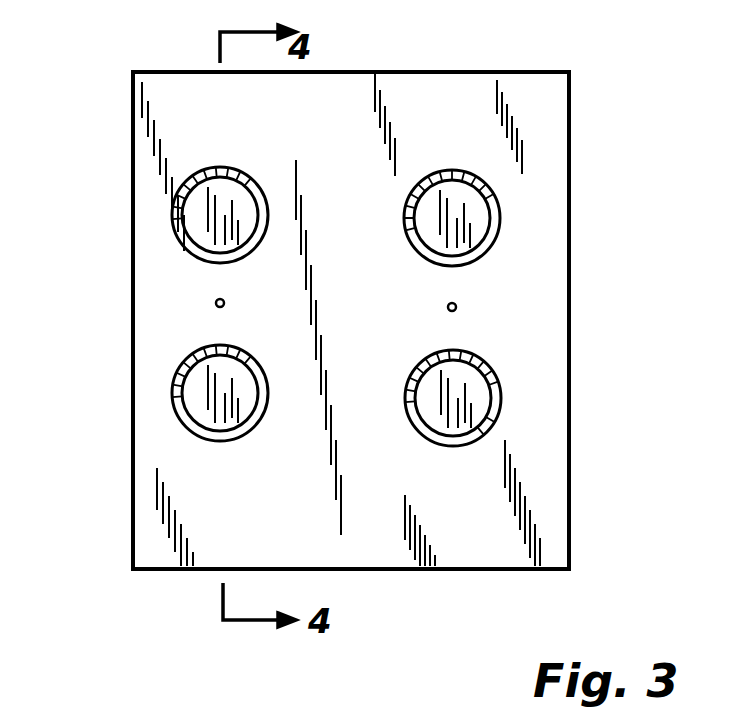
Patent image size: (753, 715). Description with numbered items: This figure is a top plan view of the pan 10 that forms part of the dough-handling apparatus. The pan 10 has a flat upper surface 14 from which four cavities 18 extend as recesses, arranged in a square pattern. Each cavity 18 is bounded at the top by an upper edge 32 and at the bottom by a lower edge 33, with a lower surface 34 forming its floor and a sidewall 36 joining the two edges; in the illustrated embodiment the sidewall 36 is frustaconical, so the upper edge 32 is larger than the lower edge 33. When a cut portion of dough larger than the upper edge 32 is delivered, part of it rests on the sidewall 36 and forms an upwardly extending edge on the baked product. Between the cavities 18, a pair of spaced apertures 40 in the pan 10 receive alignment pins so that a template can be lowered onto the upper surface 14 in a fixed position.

The pan 10 is at (376, 314).
The upper surface 14 is at (528, 338).
The cavities 18 is at (556, 206).
The upper edge 32 is at (488, 186).
The lower edge 33 is at (498, 213).
The lower surface 34 is at (452, 237).
The sidewall 36 is at (495, 407).
The apertures 40 is at (216, 302).